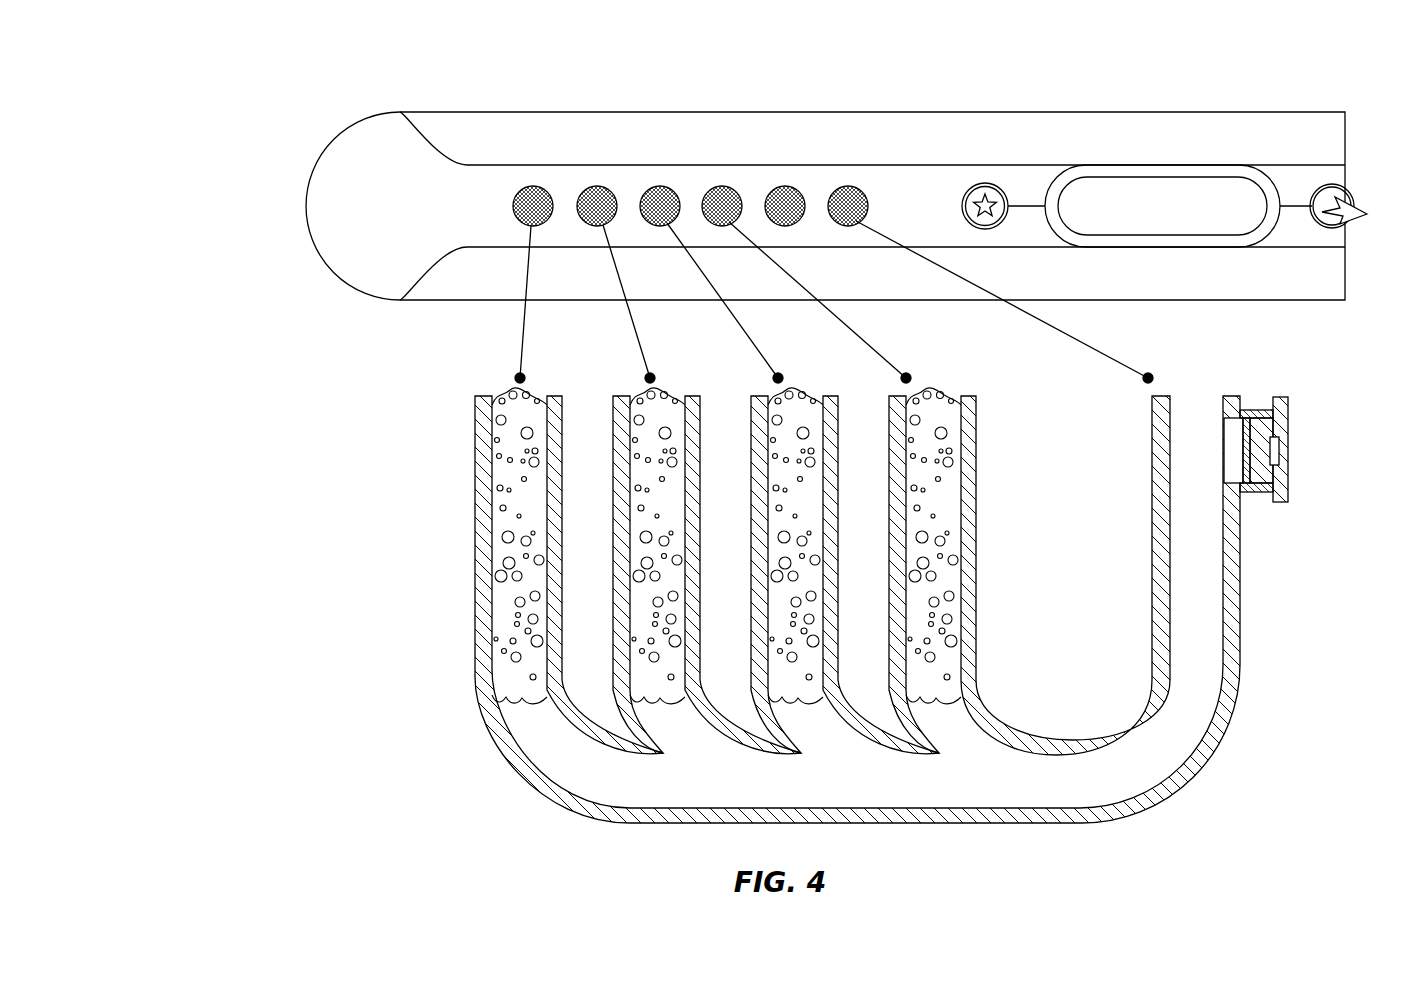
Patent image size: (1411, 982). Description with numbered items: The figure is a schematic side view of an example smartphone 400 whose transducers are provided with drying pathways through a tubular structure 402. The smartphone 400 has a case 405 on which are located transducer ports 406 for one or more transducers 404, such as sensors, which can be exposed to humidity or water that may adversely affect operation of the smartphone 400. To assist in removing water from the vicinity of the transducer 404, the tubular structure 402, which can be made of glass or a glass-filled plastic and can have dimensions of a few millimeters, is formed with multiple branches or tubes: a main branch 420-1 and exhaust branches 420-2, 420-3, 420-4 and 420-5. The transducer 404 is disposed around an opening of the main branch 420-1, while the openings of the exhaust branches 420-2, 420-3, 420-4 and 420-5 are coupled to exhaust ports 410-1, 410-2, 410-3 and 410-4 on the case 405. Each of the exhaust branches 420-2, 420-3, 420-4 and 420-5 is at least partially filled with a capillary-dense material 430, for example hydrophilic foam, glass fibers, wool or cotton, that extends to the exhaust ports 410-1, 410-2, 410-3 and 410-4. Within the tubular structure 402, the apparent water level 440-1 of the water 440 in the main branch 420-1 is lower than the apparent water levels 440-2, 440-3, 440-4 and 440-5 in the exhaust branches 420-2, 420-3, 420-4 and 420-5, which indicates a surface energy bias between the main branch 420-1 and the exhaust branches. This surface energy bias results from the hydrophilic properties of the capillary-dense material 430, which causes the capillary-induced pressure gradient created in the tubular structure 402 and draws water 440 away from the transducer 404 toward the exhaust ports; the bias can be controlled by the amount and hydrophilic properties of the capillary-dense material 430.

The smartphone 400 is at (775, 168).
The tubular structure 402 is at (845, 522).
The transducer 404 is at (1294, 455).
The case 405 is at (313, 198).
The transducer ports 406 is at (848, 186).
The exhaust port 410-1 is at (722, 186).
The exhaust port 410-2 is at (660, 186).
The exhaust port 410-3 is at (597, 186).
The exhaust port 410-4 is at (533, 186).
The main branch 420-1 is at (1152, 575).
The exhaust branch 420-2 is at (977, 576).
The exhaust branch 420-3 is at (751, 632).
The exhaust branch 420-4 is at (613, 632).
The exhaust branch 420-5 is at (474, 633).
The capillary-dense material 430 is at (530, 688).
The water 440 is at (1199, 722).
The apparent water level 440-1 is at (1223, 528).
The apparent water level 440-2 is at (908, 396).
The apparent water level 440-3 is at (770, 396).
The apparent water level 440-4 is at (632, 396).
The apparent water level 440-5 is at (497, 396).